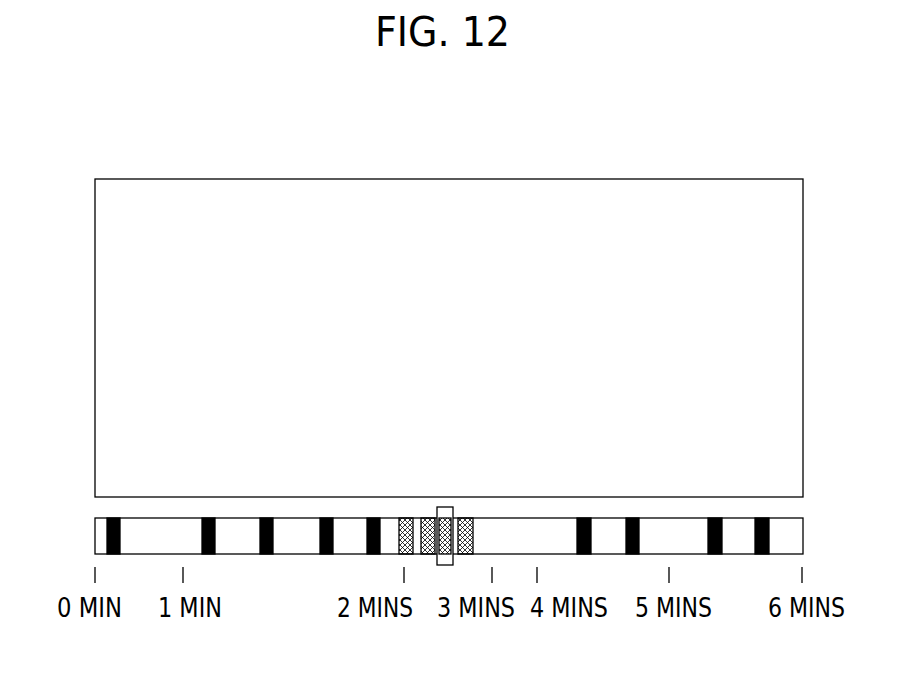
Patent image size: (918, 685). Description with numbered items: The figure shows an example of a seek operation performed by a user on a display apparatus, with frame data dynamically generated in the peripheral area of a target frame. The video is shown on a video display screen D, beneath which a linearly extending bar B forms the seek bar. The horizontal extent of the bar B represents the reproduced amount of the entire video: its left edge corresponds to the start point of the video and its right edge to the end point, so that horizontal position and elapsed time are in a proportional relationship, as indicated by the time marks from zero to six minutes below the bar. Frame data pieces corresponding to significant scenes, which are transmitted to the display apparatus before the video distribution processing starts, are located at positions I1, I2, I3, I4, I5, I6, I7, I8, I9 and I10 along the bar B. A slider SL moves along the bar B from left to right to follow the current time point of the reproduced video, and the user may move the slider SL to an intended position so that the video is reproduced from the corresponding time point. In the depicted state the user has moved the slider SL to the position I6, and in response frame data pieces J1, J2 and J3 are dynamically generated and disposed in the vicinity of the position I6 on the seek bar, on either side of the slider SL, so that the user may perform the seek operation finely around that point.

The video display screen D is at (636, 179).
The bar B is at (804, 536).
The position I1 is at (114, 517).
The position I2 is at (208, 517).
The position I3 is at (266, 517).
The position I4 is at (326, 517).
The position I5 is at (373, 517).
The position I6 is at (441, 507).
The position I7 is at (584, 517).
The position I8 is at (632, 517).
The position I9 is at (715, 517).
The position I10 is at (762, 517).
The frame data piece J1 is at (407, 517).
The frame data piece J2 is at (428, 517).
The frame data piece J3 is at (465, 517).
The slider SL is at (433, 558).